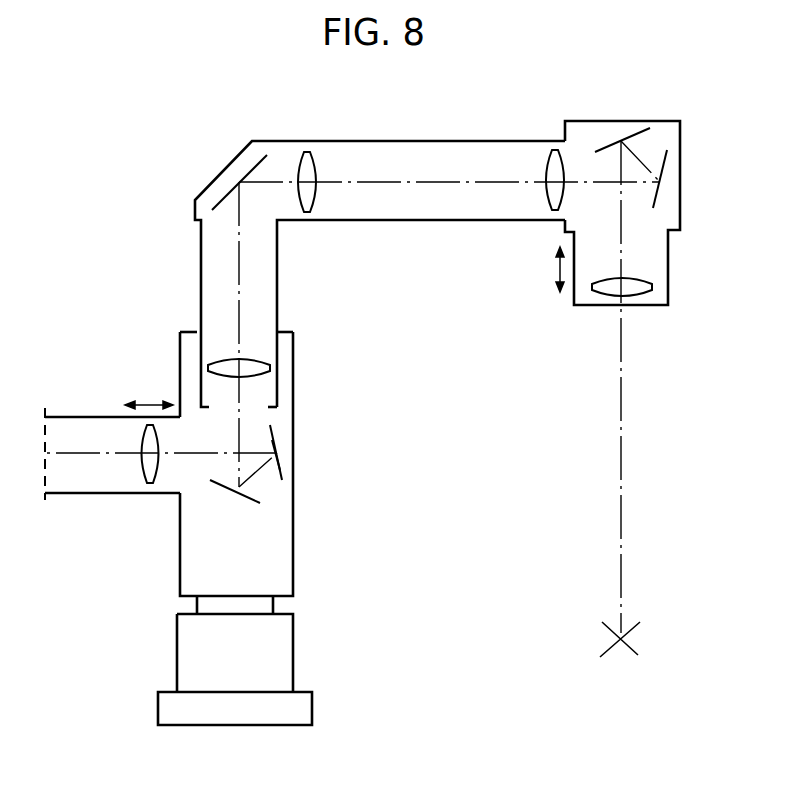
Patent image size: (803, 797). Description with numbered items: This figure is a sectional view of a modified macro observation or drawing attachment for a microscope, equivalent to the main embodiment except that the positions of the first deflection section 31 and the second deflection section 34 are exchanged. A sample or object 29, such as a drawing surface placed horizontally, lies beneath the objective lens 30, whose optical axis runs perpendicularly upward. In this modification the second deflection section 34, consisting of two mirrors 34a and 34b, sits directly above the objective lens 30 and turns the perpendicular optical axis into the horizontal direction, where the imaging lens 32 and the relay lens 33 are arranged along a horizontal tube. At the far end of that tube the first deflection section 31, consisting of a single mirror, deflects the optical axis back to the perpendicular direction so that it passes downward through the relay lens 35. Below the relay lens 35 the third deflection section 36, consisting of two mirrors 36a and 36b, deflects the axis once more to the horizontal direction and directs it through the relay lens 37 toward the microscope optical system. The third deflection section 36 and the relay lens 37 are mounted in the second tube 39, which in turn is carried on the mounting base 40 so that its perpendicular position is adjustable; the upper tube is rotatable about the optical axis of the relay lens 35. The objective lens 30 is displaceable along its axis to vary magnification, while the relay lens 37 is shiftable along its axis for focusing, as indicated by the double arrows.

The sample or object 29 is at (630, 639).
The objective lens 30 is at (650, 287).
The first deflection section 31 is at (225, 197).
The imaging lens 32 is at (550, 150).
The relay lens 33 is at (305, 158).
The second deflection section 34 is at (668, 133).
The mirror 34a is at (607, 145).
The mirror 34b is at (663, 169).
The relay lens 35 is at (250, 370).
The third deflection section 36 is at (280, 438).
The mirror 36a is at (266, 504).
The mirror 36b is at (280, 468).
The relay lens 37 is at (150, 482).
The second tube 39 is at (287, 575).
The mounting base 40 is at (287, 648).